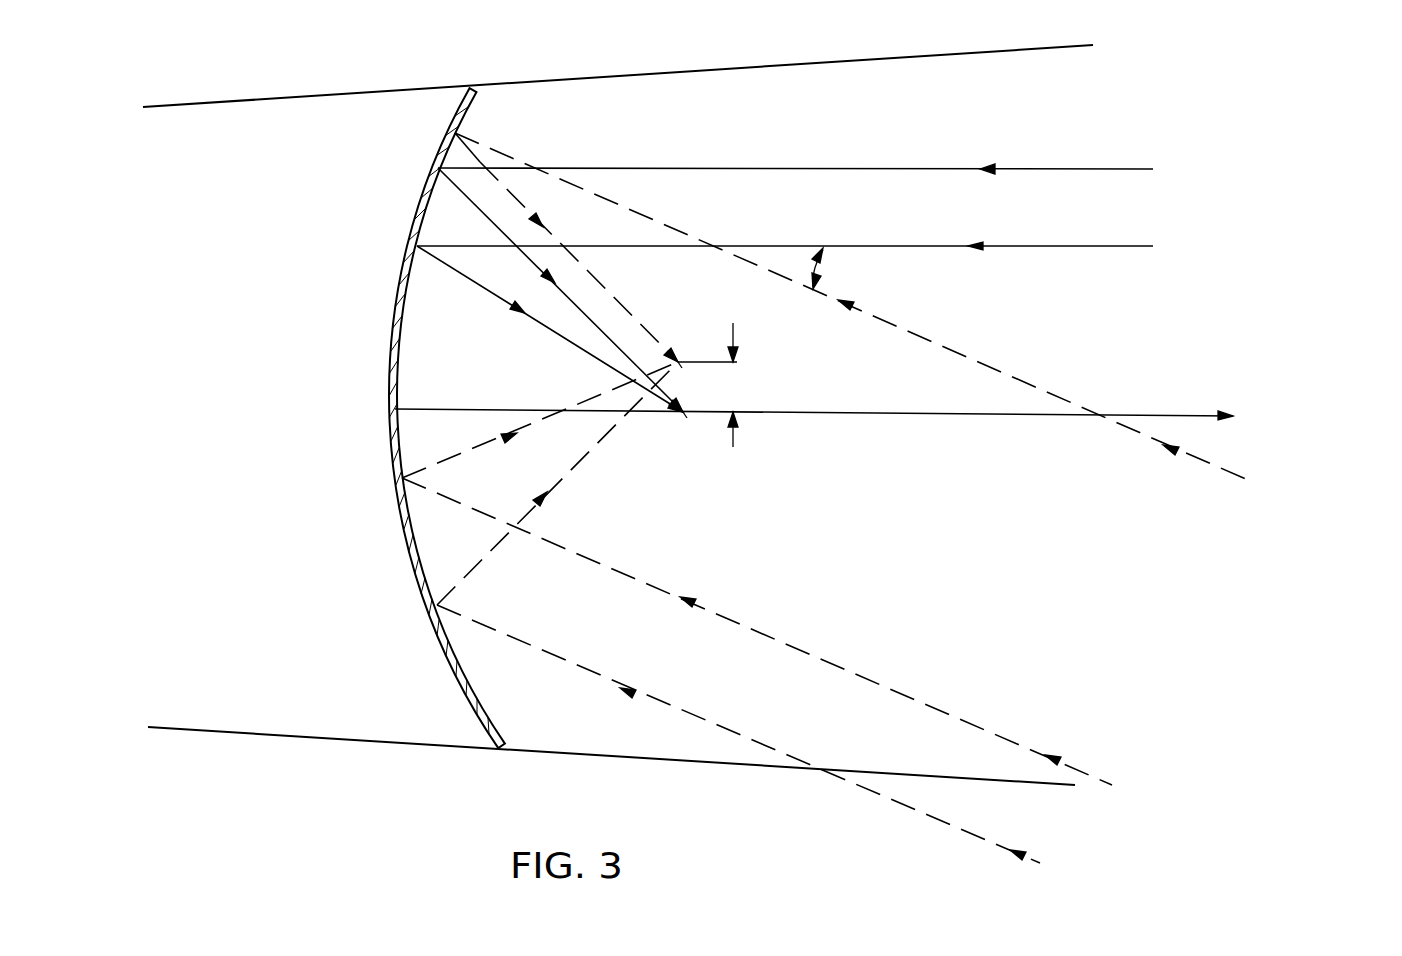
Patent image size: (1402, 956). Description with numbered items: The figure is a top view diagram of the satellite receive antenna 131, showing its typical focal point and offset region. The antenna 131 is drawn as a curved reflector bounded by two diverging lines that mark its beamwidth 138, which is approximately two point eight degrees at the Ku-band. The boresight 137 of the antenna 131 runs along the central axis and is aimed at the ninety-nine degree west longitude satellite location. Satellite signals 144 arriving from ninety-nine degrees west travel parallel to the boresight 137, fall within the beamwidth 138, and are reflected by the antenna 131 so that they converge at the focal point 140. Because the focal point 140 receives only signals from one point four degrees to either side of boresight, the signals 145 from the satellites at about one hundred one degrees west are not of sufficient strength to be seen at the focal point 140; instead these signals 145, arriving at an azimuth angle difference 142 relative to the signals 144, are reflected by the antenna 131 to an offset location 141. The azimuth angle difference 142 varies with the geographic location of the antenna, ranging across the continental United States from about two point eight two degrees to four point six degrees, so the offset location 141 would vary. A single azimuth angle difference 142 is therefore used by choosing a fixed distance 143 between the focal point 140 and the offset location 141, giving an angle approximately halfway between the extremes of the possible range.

The antenna 131 is at (428, 178).
The boresight 137 is at (1175, 415).
The beamwidth 138 is at (170, 118).
The focal point 140 is at (683, 414).
The offset location 141 is at (678, 362).
The azimuth angle difference 142 is at (818, 272).
The fixed distance 143 is at (742, 385).
The satellite signals 144 is at (892, 245).
The signals 145 is at (813, 655).